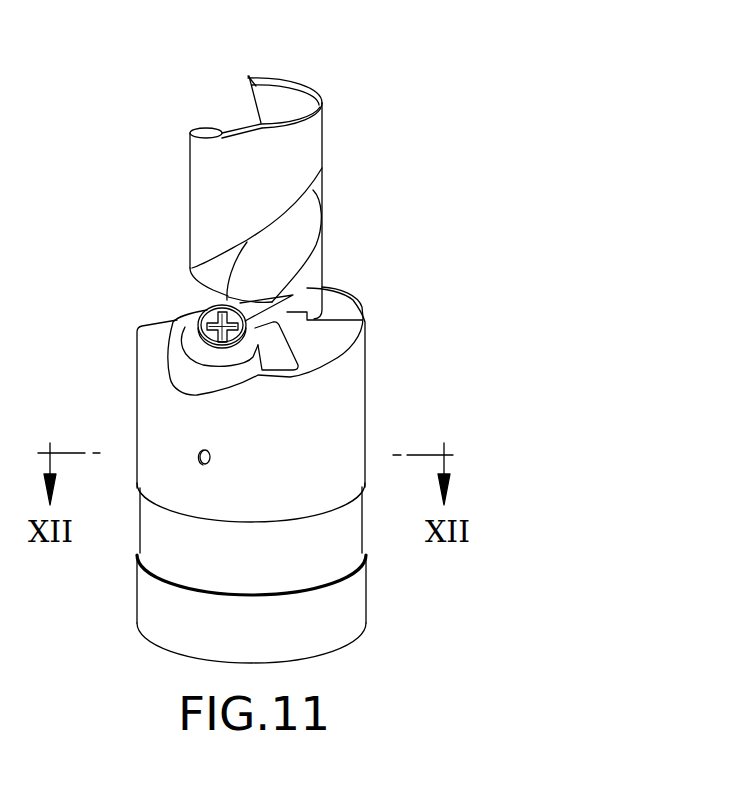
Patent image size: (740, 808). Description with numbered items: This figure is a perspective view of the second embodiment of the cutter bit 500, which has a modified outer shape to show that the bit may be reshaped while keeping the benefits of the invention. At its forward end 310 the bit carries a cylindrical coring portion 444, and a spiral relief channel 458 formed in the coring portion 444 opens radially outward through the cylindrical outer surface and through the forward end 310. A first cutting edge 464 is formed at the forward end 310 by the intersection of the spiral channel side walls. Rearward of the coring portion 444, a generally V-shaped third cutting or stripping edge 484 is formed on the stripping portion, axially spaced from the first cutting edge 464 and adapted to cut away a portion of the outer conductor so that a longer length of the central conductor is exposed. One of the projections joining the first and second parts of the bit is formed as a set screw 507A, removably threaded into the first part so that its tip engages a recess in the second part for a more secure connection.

The forward end 310 is at (291, 168).
The coring portion 444 is at (297, 150).
The spiral relief channel 458 is at (300, 232).
The first cutting edge 464 is at (254, 84).
The third cutting or stripping edge 484 is at (290, 348).
The cutter bit 500 is at (199, 464).
The set screw 507A is at (213, 456).